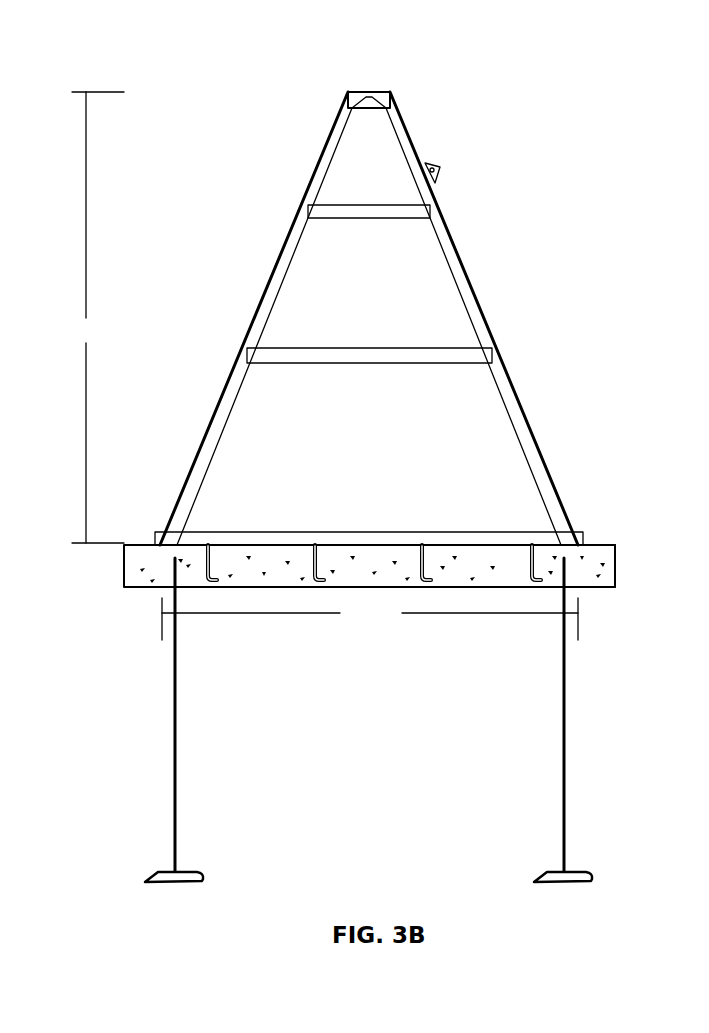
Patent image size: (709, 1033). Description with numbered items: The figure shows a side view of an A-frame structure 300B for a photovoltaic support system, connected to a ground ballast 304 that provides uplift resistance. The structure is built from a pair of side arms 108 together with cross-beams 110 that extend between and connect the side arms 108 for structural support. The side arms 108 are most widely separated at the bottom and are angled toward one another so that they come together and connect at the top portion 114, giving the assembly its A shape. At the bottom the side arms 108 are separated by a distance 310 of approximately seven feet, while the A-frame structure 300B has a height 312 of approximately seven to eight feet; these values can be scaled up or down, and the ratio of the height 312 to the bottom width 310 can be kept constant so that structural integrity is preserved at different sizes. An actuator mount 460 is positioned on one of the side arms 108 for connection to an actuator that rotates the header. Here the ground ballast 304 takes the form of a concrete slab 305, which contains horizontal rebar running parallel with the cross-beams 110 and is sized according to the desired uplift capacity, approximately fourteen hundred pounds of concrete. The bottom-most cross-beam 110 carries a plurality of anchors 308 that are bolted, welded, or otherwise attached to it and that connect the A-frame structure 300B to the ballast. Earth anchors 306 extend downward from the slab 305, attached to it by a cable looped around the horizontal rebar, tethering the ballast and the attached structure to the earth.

The A-frame structure 300B is at (376, 287).
The side arms 108 is at (270, 302).
The cross-beams 110 is at (373, 220).
The top portion 114 is at (369, 99).
The actuator mount 460 is at (440, 166).
The ground ballast 304 is at (124, 563).
The concrete slab 305 is at (590, 552).
The anchors 308 is at (533, 545).
The earth anchors 306 is at (176, 690).
The distance 310 is at (393, 626).
The height 312 is at (108, 341).